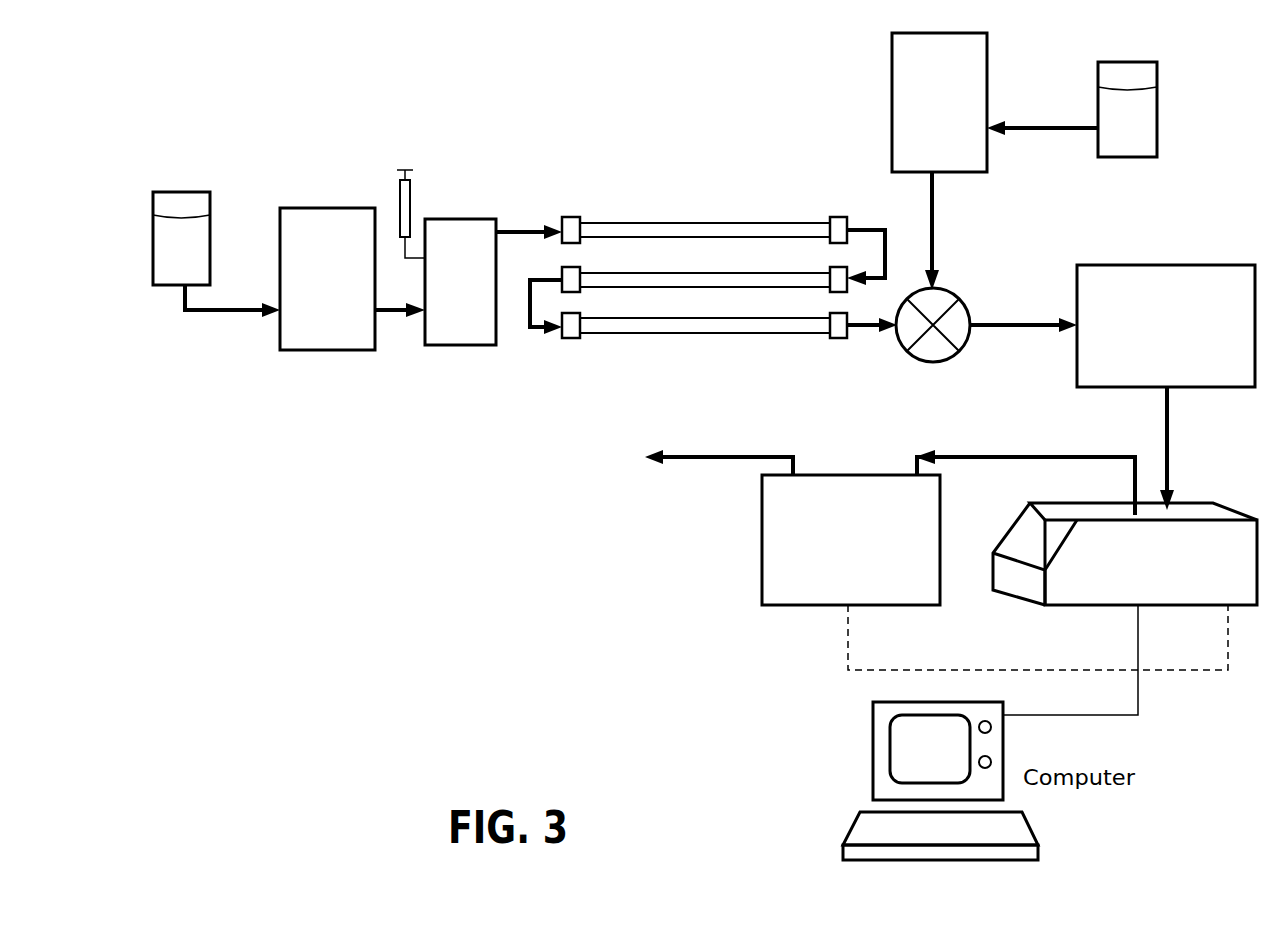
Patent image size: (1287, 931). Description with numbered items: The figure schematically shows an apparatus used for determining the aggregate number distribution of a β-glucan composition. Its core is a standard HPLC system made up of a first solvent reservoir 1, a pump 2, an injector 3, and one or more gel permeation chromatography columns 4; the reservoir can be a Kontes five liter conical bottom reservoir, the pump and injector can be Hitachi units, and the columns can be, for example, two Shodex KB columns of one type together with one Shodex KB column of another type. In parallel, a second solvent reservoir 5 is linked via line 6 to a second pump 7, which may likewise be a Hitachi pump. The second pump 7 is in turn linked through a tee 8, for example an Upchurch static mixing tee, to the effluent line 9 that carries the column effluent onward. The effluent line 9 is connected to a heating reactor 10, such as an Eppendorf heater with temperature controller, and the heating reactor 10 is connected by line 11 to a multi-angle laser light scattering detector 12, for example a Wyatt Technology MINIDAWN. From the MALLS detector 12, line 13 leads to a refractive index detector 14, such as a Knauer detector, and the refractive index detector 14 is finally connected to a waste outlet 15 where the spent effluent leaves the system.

The first solvent reservoir 1 is at (153, 252).
The pump 2 is at (322, 350).
The injector 3 is at (459, 350).
The gel permeation chromatography columns 4 is at (712, 265).
The second solvent reservoir 5 is at (1157, 110).
The line 6 is at (1030, 125).
The second pump 7 is at (892, 82).
The tee 8 is at (920, 361).
The effluent line 9 is at (1003, 322).
The heating reactor 10 is at (1188, 265).
The line 11 is at (1170, 436).
The multi-angle laser light scattering detector 12 is at (1225, 505).
The line 13 is at (1003, 453).
The refractive index detector 14 is at (762, 532).
The waste outlet 15 is at (710, 455).